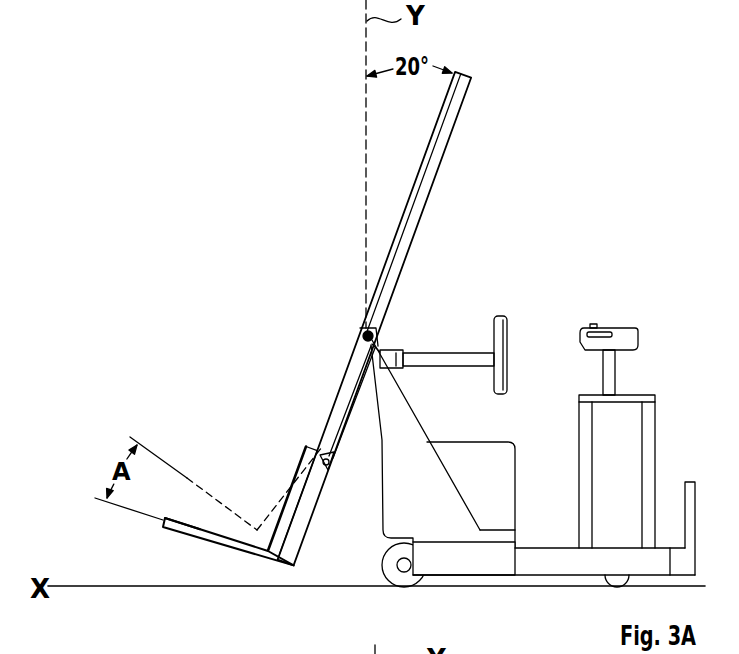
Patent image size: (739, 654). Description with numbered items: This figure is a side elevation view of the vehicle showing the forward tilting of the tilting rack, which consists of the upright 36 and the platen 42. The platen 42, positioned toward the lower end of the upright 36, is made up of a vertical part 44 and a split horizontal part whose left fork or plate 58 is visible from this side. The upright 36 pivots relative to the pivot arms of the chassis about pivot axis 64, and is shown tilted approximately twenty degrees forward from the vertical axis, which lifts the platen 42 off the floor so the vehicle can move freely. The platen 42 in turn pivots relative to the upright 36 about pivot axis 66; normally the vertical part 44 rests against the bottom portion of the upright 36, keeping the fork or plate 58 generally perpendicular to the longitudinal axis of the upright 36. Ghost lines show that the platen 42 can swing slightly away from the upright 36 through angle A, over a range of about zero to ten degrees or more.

The upright 36 is at (434, 181).
The platen 42 is at (222, 547).
The vertical part 44 is at (300, 541).
The left fork or plate 58 is at (170, 522).
The pivot axis 64 is at (362, 332).
The pivot axis 66 is at (325, 450).